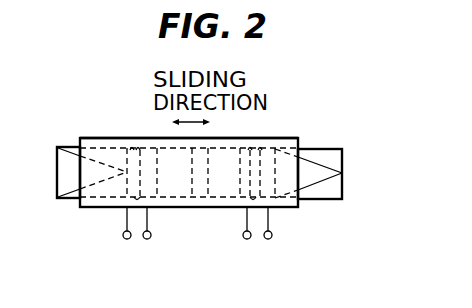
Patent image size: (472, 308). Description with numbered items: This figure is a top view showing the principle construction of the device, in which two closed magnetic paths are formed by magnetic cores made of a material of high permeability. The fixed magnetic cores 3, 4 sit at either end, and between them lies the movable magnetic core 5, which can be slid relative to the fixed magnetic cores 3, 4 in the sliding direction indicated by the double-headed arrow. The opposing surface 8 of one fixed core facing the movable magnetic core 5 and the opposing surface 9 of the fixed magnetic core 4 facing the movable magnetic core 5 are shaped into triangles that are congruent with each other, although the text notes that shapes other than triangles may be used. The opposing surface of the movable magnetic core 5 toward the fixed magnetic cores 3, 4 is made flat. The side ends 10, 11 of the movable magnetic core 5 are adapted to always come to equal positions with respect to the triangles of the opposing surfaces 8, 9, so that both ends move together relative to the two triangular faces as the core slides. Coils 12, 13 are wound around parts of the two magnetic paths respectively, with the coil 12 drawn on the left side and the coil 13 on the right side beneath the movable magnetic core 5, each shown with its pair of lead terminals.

The fixed magnetic core 3 is at (72, 208).
The fixed magnetic core 4 is at (313, 200).
The movable magnetic core 5 is at (203, 208).
The opposing surface 8 is at (62, 185).
The opposing surface 9 is at (320, 173).
The side end 10 is at (80, 138).
The side end 11 is at (302, 142).
The coil 12 is at (125, 218).
The coil 13 is at (243, 227).